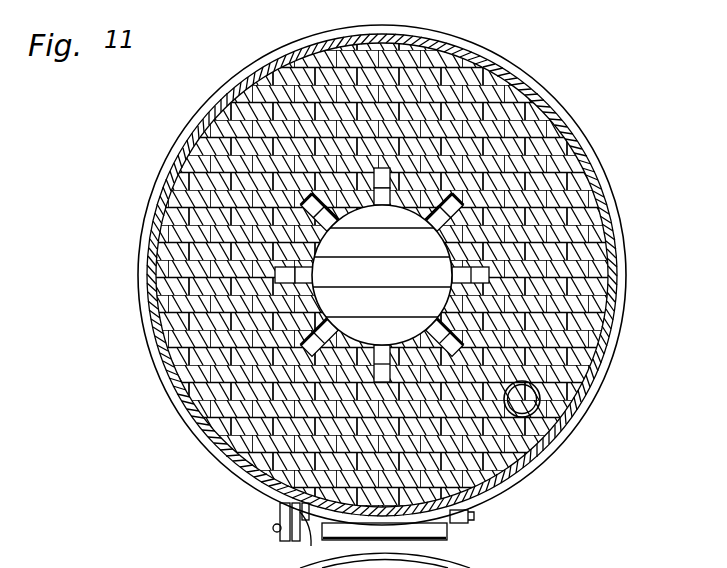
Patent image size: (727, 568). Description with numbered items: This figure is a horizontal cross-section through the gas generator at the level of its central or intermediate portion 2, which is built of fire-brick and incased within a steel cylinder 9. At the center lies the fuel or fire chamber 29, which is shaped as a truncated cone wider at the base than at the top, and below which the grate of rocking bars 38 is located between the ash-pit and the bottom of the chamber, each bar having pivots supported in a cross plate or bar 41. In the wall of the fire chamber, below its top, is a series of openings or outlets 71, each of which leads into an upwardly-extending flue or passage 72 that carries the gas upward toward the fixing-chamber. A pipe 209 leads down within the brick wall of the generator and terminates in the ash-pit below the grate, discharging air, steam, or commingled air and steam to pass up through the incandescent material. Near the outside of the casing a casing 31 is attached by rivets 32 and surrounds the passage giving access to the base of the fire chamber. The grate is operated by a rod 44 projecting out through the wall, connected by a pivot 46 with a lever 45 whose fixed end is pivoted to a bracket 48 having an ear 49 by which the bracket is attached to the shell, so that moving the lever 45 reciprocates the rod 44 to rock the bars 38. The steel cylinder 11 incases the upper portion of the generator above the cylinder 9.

The central or intermediate portion 2 is at (590, 227).
The cylinder 9 is at (588, 183).
The pipe 209 is at (530, 402).
The fuel or fire chamber 29 is at (382, 275).
The rocking bars 38 is at (382, 274).
The upwardly-extending flue or passage 72 is at (369, 225).
The cross plate or bar 41 is at (382, 196).
The openings or outlets 71 is at (304, 275).
The cylinder 11 is at (381, 218).
The rod 44 is at (280, 512).
The lever 45 is at (294, 541).
The pivot 46 is at (273, 529).
The bracket 48 is at (303, 540).
The ear 49 is at (306, 520).
The casing 31 is at (447, 532).
The rivets 32 is at (470, 517).